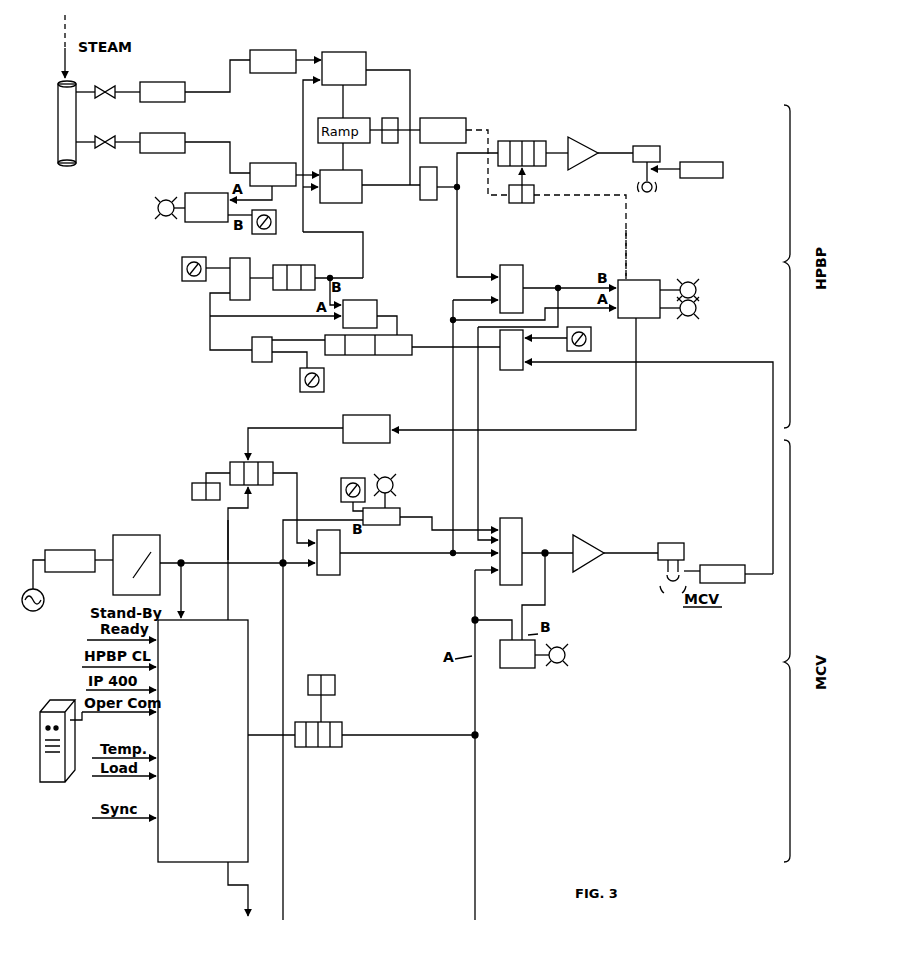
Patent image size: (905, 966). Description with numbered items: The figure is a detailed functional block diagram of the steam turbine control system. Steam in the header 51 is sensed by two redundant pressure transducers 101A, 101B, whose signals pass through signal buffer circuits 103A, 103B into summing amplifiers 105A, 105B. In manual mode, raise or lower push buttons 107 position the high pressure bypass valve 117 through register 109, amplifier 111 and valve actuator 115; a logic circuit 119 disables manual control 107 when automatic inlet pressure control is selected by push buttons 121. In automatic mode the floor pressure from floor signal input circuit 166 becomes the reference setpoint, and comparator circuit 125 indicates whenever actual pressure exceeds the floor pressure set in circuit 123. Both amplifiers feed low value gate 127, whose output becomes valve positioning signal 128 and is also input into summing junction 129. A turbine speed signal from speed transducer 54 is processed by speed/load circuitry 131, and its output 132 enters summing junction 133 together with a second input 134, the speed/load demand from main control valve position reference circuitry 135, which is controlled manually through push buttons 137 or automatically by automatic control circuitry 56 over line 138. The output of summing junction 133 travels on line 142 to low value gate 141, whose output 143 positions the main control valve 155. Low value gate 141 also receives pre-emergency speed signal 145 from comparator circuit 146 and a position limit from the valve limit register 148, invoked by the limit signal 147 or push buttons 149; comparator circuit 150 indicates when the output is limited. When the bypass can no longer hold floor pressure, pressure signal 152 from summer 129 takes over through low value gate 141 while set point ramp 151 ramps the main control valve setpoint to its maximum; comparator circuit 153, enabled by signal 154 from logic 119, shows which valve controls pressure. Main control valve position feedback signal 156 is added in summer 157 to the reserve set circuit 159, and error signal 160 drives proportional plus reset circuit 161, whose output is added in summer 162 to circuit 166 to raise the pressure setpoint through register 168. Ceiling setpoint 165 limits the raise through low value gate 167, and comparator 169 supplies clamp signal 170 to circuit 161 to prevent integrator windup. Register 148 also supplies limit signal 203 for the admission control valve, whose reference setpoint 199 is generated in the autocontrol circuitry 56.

The steam header pipe 51 is at (58, 146).
The speed transducer 54 is at (86, 550).
The automatic control circuitry 56 is at (221, 805).
The pressure transducer 101A is at (166, 73).
The pressure transducer 101B is at (146, 133).
The signal buffer circuit 103A is at (273, 50).
The signal buffer circuit 103B is at (291, 163).
The summing amplifier 105A is at (350, 42).
The summing amplifier 105B is at (352, 203).
The raise or lower push buttons 107 is at (536, 205).
The register 109 is at (544, 141).
The amplifier 111 is at (585, 137).
The valve actuator or servo 115 is at (645, 146).
The high pressure bypass valve 117 is at (668, 163).
The logic circuit 119 is at (458, 118).
The push buttons 121 is at (391, 118).
The floor pressure circuit 123 is at (256, 236).
The comparator circuit 125 is at (196, 193).
The low value gate 127 is at (428, 204).
The valve positioning signal 128 is at (457, 258).
The summing junction 129 is at (515, 265).
The speed/load circuitry 131 is at (140, 535).
The speed/load circuitry output 132 is at (236, 568).
The summing junction 133 is at (322, 575).
The speed/load demand signal 134 is at (297, 487).
The MCV position reference circuitry 135 is at (228, 460).
The push buttons 137 is at (212, 504).
The line 138 is at (228, 552).
The low value gate 141 is at (526, 520).
The speed/load signal line 142 is at (453, 300).
The main control valve position demand signal 143 is at (545, 550).
The pre-emergency speed signal 145 is at (488, 530).
The comparator circuit 146 is at (396, 505).
The MCV limit signal 147 is at (258, 740).
The MCV-ACV register 148 is at (312, 750).
The push buttons 149 is at (329, 675).
The comparator circuit 150 is at (505, 670).
The set point ramp 151 is at (356, 415).
The pressure signal 152 is at (478, 447).
The comparator circuit 153 is at (644, 280).
The enable signal 154 is at (627, 265).
The main control valve 155 is at (672, 543).
The MCV position feedback signal 156 is at (773, 490).
The summer 157 is at (505, 370).
The reserve set circuit 159 is at (592, 340).
The positive error signal 160 is at (426, 360).
The proportional plus reset circuit 161 is at (397, 358).
The summer 162 is at (251, 362).
The ceiling setpoint 165 is at (182, 268).
The floor setpoint adjustment circuit 166 is at (300, 388).
The low value gate 167 is at (230, 280).
The register 168 is at (296, 265).
The comparator 169 is at (367, 300).
The clamp signal 170 is at (398, 330).
The setpoint 199 is at (246, 898).
The limit signal 203 is at (477, 880).